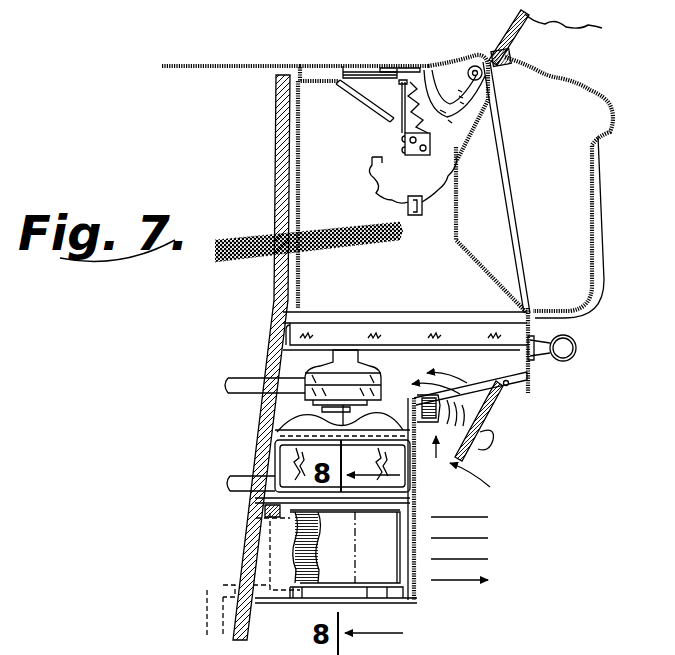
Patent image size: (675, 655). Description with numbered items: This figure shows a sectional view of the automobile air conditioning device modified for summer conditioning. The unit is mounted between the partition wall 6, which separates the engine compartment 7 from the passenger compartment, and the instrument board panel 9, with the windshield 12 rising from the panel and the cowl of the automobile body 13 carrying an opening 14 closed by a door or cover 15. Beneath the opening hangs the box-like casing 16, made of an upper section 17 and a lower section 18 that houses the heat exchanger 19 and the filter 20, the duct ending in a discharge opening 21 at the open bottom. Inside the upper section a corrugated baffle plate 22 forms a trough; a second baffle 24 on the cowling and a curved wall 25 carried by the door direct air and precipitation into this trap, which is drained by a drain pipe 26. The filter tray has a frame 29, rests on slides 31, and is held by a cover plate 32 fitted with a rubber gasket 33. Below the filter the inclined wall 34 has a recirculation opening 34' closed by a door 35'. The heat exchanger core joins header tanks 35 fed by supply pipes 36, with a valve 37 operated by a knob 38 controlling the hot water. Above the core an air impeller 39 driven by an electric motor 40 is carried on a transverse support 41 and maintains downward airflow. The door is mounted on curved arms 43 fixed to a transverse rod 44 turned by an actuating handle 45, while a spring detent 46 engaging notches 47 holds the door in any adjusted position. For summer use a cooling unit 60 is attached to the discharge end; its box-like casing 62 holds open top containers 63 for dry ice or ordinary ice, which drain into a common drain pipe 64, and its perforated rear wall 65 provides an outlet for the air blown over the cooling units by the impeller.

The partition wall 6 is at (273, 110).
The engine compartment 7 is at (205, 344).
The instrument board panel 9 is at (592, 194).
The windshield 12 is at (519, 38).
The automobile body 13 is at (457, 57).
The opening 14 is at (358, 63).
The door or cover 15 is at (394, 48).
The box-like casing 16 is at (486, 230).
The upper section 17 is at (458, 212).
The lower section 18 is at (528, 380).
The heat exchanger 19 is at (290, 452).
The filter 20 is at (376, 330).
The discharge opening 21 is at (414, 500).
The baffle plate 22 is at (372, 186).
The second baffle 24 is at (353, 100).
The curved wall 25 is at (433, 108).
The drain pipe 26 is at (348, 243).
The frame 29 is at (440, 330).
The slides 31 is at (410, 351).
The cover plate 32 is at (533, 333).
The rubber gasket 33 is at (522, 354).
The inclined wall 34 is at (466, 453).
The recirculation opening 34' is at (447, 388).
The header tanks 35 is at (300, 464).
The door 35' is at (504, 421).
The supply pipes 36 is at (252, 374).
The valve 37 is at (387, 408).
The knob 38 is at (425, 499).
The air impeller 39 is at (297, 419).
The electric motor 40 is at (327, 373).
The transverse support 41 is at (363, 388).
The curved arms 43 is at (455, 126).
The transverse rod 44 is at (492, 54).
The actuating handle 45 is at (505, 232).
The spring detent 46 is at (399, 87).
The notches 47 is at (416, 122).
The cooling unit 60 is at (422, 592).
The box-like casing 62 is at (313, 604).
The open top containers 63 is at (345, 562).
The drain pipe 64 is at (223, 585).
The rear wall 65 is at (400, 604).